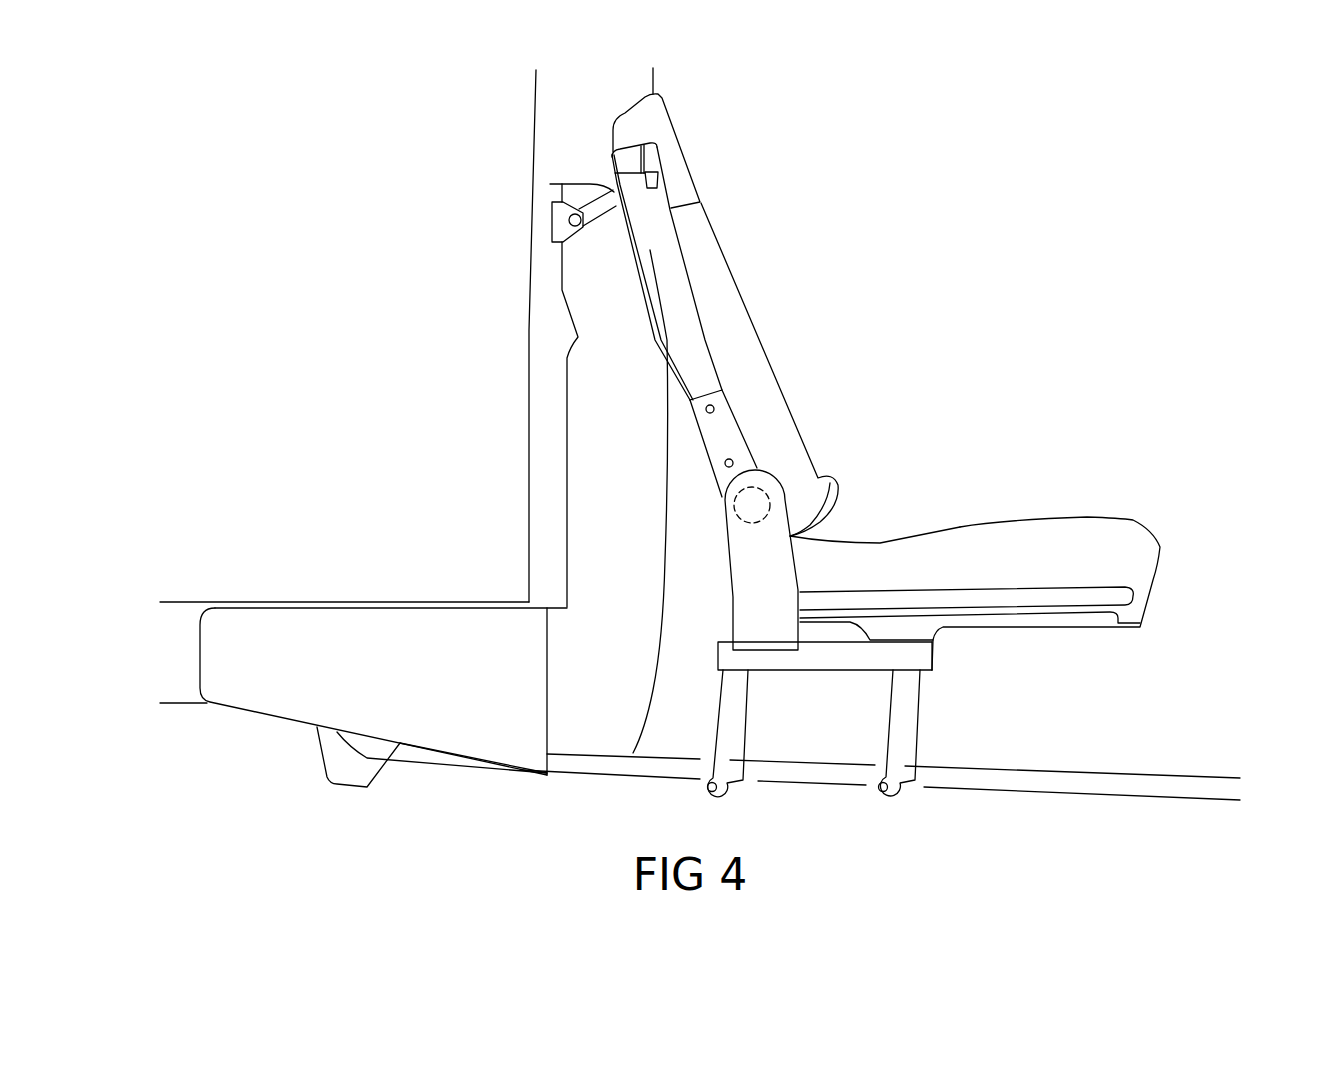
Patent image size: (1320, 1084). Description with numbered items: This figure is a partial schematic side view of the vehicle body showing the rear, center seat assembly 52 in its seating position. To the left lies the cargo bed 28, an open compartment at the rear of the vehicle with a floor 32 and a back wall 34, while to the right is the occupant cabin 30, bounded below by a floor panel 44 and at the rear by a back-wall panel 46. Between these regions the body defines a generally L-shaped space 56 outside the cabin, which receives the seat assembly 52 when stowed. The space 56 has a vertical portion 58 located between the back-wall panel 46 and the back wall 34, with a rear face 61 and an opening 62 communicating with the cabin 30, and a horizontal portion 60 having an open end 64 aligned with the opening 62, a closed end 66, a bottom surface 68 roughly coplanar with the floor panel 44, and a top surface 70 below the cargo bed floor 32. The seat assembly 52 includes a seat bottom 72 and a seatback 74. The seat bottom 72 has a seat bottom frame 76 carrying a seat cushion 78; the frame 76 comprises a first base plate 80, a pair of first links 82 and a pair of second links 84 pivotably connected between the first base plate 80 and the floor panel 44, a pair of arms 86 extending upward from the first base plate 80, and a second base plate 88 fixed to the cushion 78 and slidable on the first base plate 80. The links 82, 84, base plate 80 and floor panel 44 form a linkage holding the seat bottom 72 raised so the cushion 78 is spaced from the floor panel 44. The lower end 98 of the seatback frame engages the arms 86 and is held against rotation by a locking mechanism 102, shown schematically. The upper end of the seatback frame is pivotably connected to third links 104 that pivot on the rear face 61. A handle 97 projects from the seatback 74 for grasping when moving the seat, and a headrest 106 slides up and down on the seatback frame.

The cargo bed 28 is at (378, 420).
The occupant cabin 30 is at (893, 303).
The floor 32 is at (360, 600).
The back wall 34 is at (529, 427).
The floor panel 44 is at (1095, 780).
The back-wall panel 46 is at (653, 94).
The rear, center seat assembly 52 is at (785, 381).
The space 56 is at (572, 575).
The vertical portion 58 is at (573, 393).
The horizontal portion 60 is at (378, 628).
The rear face 61 is at (566, 450).
The opening 62 is at (677, 536).
The open end 64 is at (638, 753).
The closed end 66 is at (205, 655).
The bottom surface 68 is at (370, 737).
The top surface 70 is at (500, 612).
The seat bottom 72 is at (1025, 515).
The seatback 74 is at (757, 312).
The seat bottom frame 76 is at (937, 665).
The seat cushion 78 is at (1140, 558).
The first base plate 80 is at (812, 665).
The first links 82 is at (740, 721).
The second links 84 is at (910, 718).
The arms 86 is at (780, 557).
The second base plate 88 is at (1045, 605).
The handle 97 is at (843, 497).
The lower end 98 is at (757, 467).
The locking mechanism 102 is at (763, 478).
The third links 104 is at (602, 210).
The headrest 106 is at (670, 130).